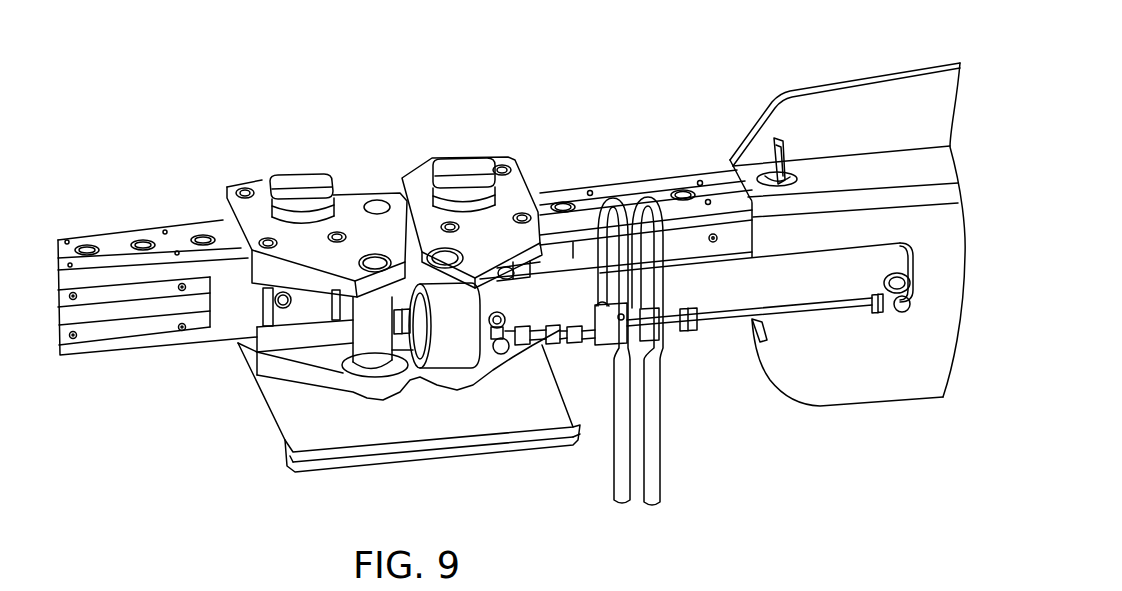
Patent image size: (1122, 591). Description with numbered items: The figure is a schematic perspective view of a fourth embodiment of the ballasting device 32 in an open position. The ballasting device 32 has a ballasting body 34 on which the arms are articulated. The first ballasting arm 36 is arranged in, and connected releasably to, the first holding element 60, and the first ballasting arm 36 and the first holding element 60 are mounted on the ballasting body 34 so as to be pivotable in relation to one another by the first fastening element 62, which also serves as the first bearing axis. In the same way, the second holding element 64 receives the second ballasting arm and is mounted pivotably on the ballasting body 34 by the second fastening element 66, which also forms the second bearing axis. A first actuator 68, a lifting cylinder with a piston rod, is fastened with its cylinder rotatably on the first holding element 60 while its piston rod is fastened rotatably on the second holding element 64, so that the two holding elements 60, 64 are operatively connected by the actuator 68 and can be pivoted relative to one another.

The ballasting device 32 is at (333, 83).
The ballasting body 34 is at (297, 410).
The first ballasting arm 36 is at (620, 190).
The first holding element 60 is at (502, 207).
The first fastening element 62 is at (470, 170).
The second holding element 64 is at (236, 212).
The second fastening element 66 is at (303, 188).
The first actuator 68 is at (732, 283).